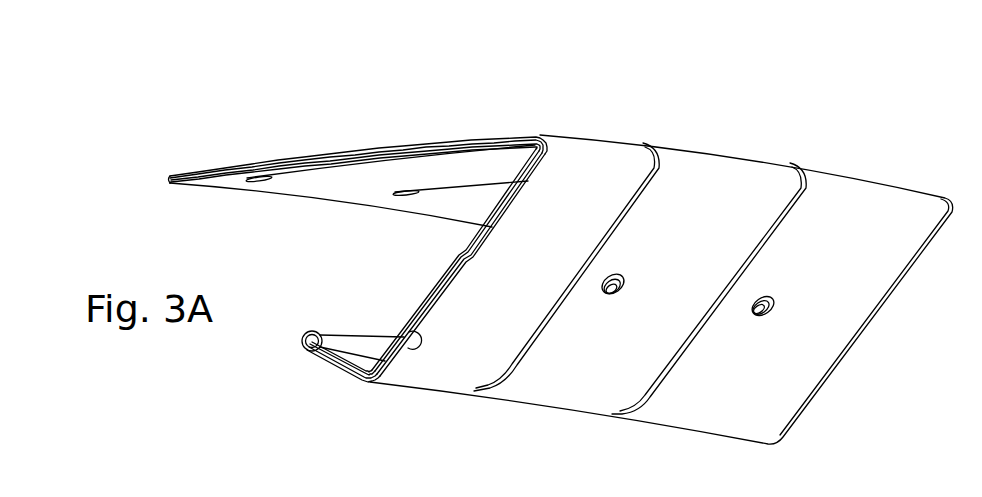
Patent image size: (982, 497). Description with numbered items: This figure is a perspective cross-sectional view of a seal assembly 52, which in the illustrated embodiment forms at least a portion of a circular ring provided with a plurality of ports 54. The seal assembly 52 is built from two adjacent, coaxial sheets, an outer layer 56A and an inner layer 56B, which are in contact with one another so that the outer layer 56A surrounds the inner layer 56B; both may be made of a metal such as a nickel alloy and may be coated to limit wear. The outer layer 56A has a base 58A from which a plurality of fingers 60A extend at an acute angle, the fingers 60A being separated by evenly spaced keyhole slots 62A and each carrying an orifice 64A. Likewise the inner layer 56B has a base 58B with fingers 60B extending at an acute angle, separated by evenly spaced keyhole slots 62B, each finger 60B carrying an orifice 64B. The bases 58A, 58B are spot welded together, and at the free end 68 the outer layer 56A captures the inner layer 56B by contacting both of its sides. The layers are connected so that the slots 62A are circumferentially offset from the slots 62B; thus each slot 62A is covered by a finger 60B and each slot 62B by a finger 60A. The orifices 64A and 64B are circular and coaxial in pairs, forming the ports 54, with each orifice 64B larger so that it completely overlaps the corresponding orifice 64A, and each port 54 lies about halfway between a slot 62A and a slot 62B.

The seal assembly 52 is at (814, 121).
The port 54 is at (762, 295).
The outer layer 56A is at (190, 171).
The inner layer 56B is at (190, 186).
The base 58A is at (236, 166).
The base 58B is at (245, 190).
The finger 60A is at (420, 328).
The finger 60B is at (433, 302).
The keyhole slot 62A is at (522, 368).
The keyhole slot 62B is at (445, 193).
The orifice 64A is at (765, 317).
The orifice 64B is at (770, 299).
The free end 68 is at (306, 350).